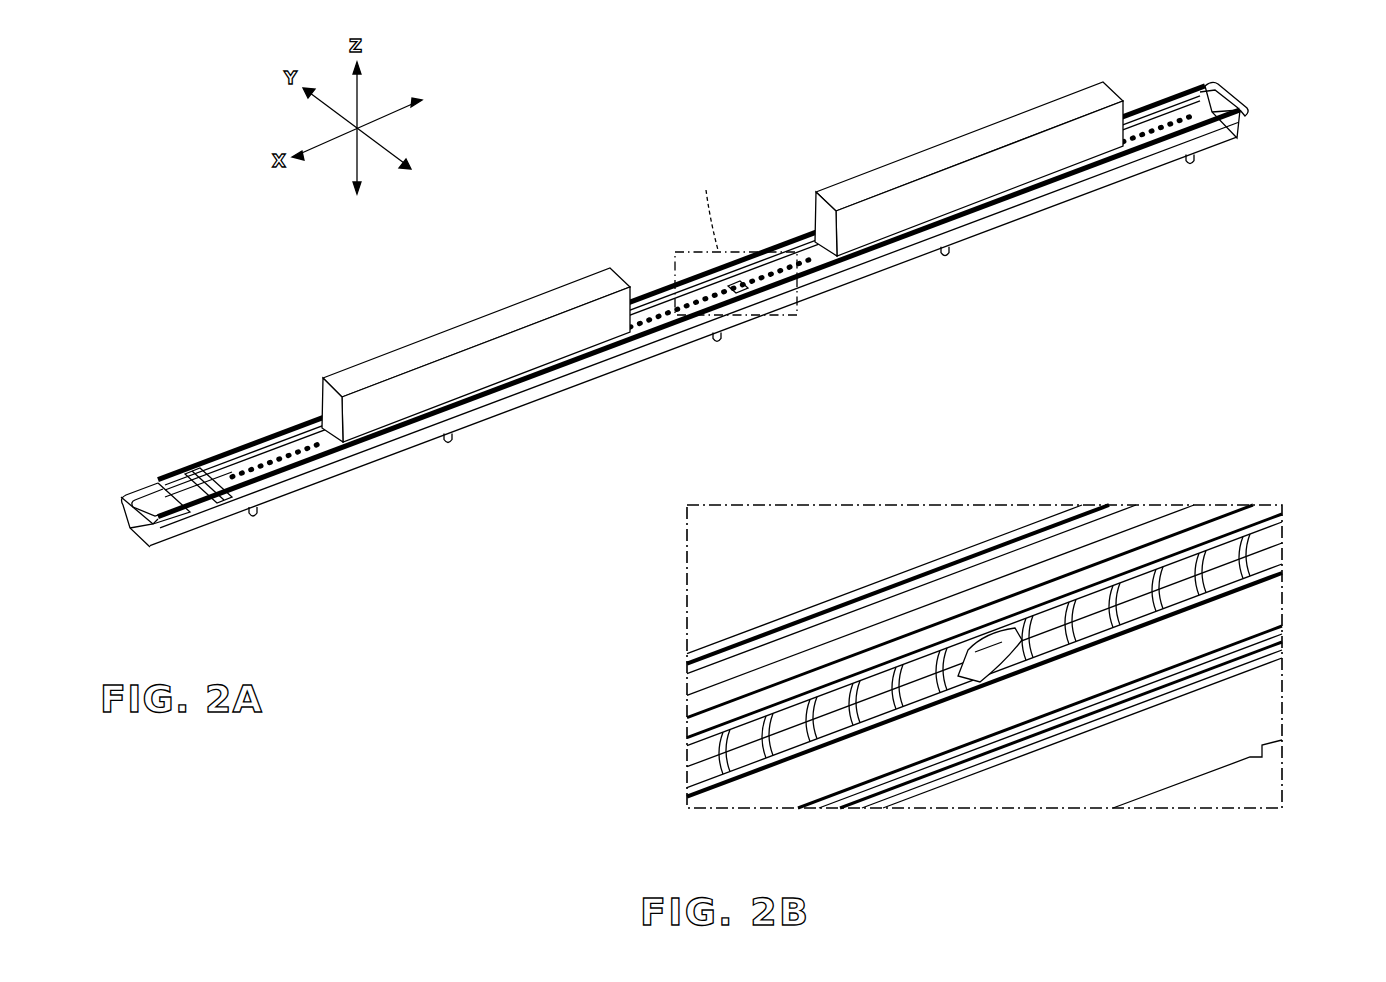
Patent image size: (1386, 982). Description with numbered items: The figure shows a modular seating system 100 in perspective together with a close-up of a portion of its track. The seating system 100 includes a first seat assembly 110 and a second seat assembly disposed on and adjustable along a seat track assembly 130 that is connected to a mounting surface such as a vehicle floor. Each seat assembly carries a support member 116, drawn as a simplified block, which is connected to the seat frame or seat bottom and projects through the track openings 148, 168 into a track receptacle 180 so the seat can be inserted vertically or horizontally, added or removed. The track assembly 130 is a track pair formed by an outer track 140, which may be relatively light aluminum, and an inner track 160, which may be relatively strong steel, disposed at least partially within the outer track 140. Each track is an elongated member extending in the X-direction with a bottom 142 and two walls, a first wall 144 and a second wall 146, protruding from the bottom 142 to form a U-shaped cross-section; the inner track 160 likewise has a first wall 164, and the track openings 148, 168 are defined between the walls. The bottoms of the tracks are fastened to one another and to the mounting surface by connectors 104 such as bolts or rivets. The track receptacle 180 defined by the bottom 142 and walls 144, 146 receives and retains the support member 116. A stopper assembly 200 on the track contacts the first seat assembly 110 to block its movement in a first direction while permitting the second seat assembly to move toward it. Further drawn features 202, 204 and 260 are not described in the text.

In FIG. 2A, the seating system 100 is at (762, 156).
In FIG. 2A, the connector 104 is at (1195, 160).
In FIG. 2A, the first seat assembly 110 is at (722, 256).
In FIG. 2A, the support member 116 is at (443, 345).
In FIG. 2A, the seat track assembly 130 is at (1190, 82).
In FIG. 2B, the seat track assembly 130 is at (878, 578).
In FIG. 2A, the outer track 140 is at (300, 500).
In FIG. 2B, the outer track 140 is at (1228, 630).
In FIG. 2A, the bottom 142 is at (138, 538).
In FIG. 2A, the first wall 144 is at (128, 520).
In FIG. 2B, the first wall 144 is at (718, 692).
In FIG. 2A, the second wall 146 is at (170, 545).
In FIG. 2B, the second wall 146 is at (1172, 755).
In FIG. 2A, the track opening 148 is at (177, 442).
In FIG. 2B, the track opening 148 is at (1081, 627).
In FIG. 2A, the inner track 160 is at (650, 305).
In FIG. 2B, the inner track 160 is at (937, 614).
In FIG. 2B, the first wall 164 is at (1190, 585).
In FIG. 2A, the track opening 168 is at (226, 467).
In FIG. 2B, the track opening 168 is at (1285, 530).
In FIG. 2A, the track receptacle 180 is at (290, 440).
In FIG. 2B, the track receptacle 180 is at (828, 722).
In FIG. 2A, the stopper assembly 200 is at (771, 318).
In FIG. 2B, the stopper assembly 200 is at (1017, 565).
In FIG. 2A, the rail side 202 is at (575, 405).
In FIG. 2A, the hook 204 is at (950, 262).
In FIG. 2A, the connector body 260 is at (735, 290).
In FIG. 2B, the connector body 260 is at (985, 640).